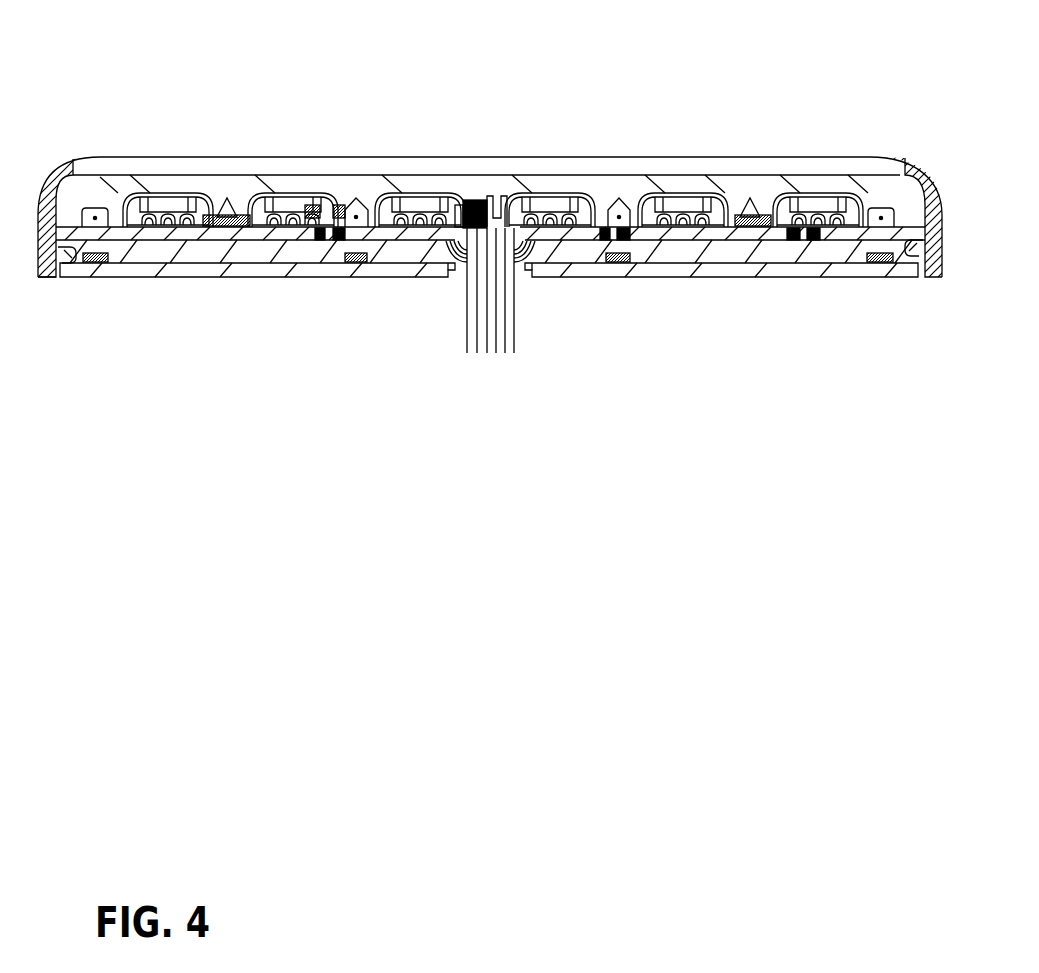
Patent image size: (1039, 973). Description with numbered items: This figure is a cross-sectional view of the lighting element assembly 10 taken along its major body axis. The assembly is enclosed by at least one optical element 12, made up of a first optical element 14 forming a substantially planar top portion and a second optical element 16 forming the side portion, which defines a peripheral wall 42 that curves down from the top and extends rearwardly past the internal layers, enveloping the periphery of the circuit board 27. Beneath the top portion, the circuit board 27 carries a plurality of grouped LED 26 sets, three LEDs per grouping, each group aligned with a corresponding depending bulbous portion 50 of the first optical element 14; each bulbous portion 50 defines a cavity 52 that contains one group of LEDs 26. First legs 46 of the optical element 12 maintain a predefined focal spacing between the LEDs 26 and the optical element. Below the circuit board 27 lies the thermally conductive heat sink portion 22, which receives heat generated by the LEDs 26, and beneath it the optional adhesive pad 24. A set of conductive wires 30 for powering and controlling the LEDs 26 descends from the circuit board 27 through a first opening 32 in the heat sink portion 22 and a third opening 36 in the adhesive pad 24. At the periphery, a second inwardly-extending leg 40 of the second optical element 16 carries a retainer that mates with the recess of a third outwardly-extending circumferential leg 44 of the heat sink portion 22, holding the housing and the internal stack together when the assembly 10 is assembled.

The lighting element assembly 10 is at (530, 28).
The optical element 12 is at (124, 150).
The first optical element 14 is at (193, 190).
The second optical element 16 is at (52, 165).
The heat sink portion 22 is at (787, 245).
The adhesive pad 24 is at (813, 255).
The light-emitting diodes 26 is at (704, 232).
The circuit board 27 is at (752, 252).
The conductive wires 30 is at (528, 330).
The first opening 32 is at (462, 265).
The third opening 36 is at (450, 285).
The second inwardly-extending leg 40 is at (92, 264).
The peripheral wall 42 is at (42, 288).
The third outwardly-extending circumferential leg 44 is at (63, 265).
The first legs 46 is at (520, 197).
The bulbous portion 50 is at (340, 207).
The cavity 52 is at (428, 198).